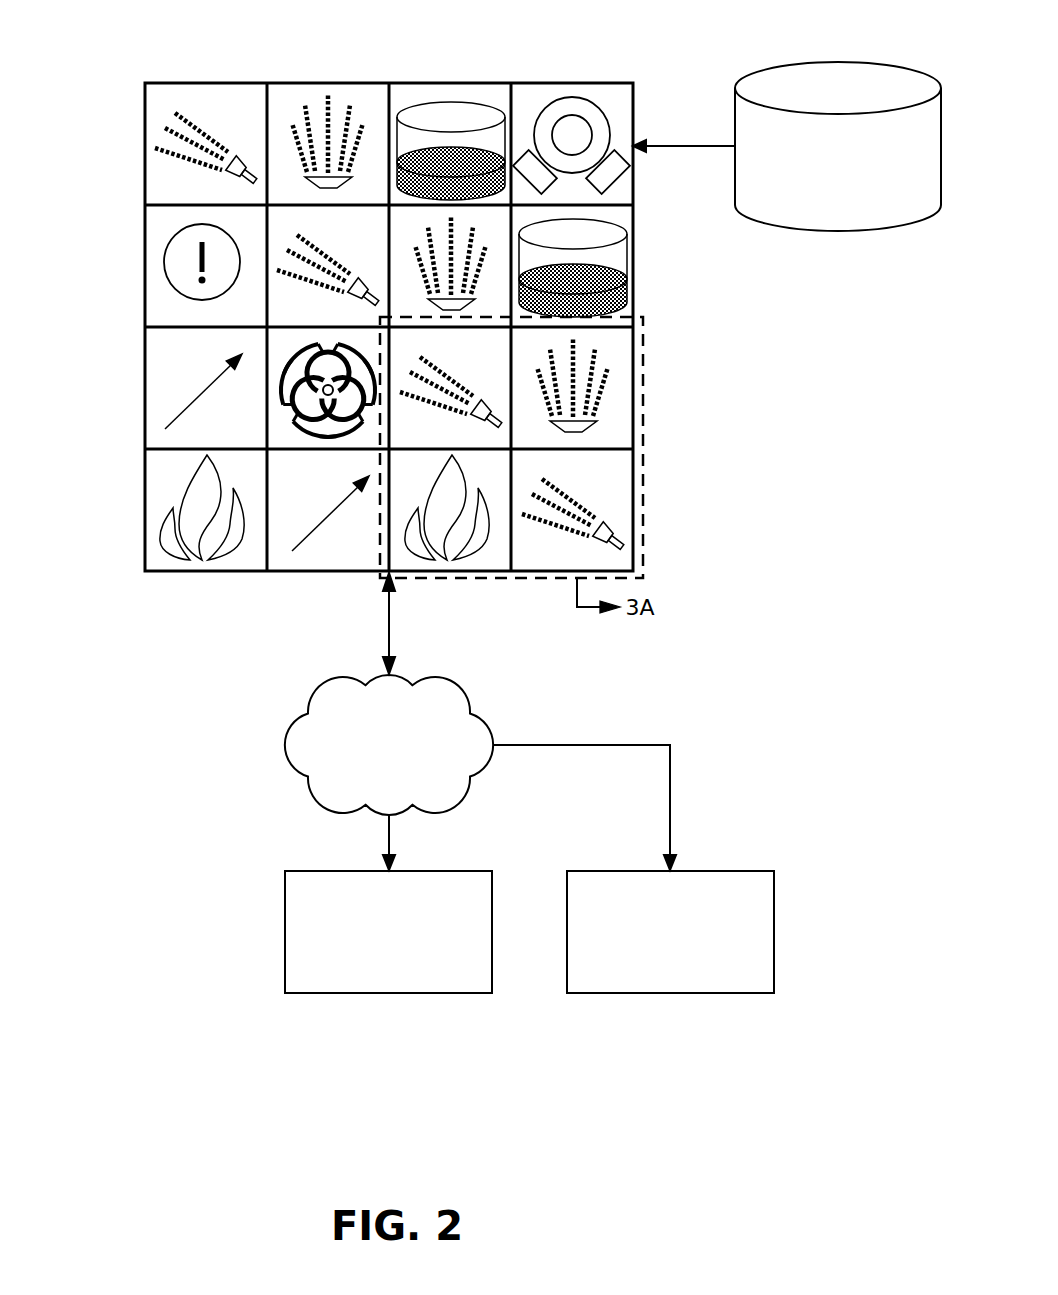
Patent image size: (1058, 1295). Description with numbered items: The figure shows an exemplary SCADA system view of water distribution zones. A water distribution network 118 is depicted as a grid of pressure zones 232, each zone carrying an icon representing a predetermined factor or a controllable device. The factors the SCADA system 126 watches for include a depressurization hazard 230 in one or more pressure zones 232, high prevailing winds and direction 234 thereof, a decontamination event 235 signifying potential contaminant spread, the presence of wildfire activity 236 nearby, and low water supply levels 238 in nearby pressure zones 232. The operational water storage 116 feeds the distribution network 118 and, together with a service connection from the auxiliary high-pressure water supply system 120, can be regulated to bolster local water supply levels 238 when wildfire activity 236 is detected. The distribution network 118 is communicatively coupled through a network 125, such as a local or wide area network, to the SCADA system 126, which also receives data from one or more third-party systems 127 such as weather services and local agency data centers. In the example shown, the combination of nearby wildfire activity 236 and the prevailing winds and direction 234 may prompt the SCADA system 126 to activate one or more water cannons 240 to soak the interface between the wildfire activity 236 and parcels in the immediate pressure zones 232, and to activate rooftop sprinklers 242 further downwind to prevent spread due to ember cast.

The operational water storage 116 is at (787, 146).
The water distribution network 118 is at (175, 68).
The auxiliary high-pressure water supply system 120 is at (572, 104).
The network 125 is at (389, 745).
The SCADA system 126 is at (388, 932).
The third-party systems 127 is at (670, 932).
The depressurization hazard 230 is at (163, 272).
The pressure zones 232 is at (143, 88).
The prevailing winds and direction 234 is at (165, 420).
The decontamination event 235 is at (308, 433).
The wildfire activity 236 is at (160, 530).
The water supply levels 238 is at (446, 96).
The water cannons 240 is at (196, 129).
The rooftop sprinklers 242 is at (598, 400).